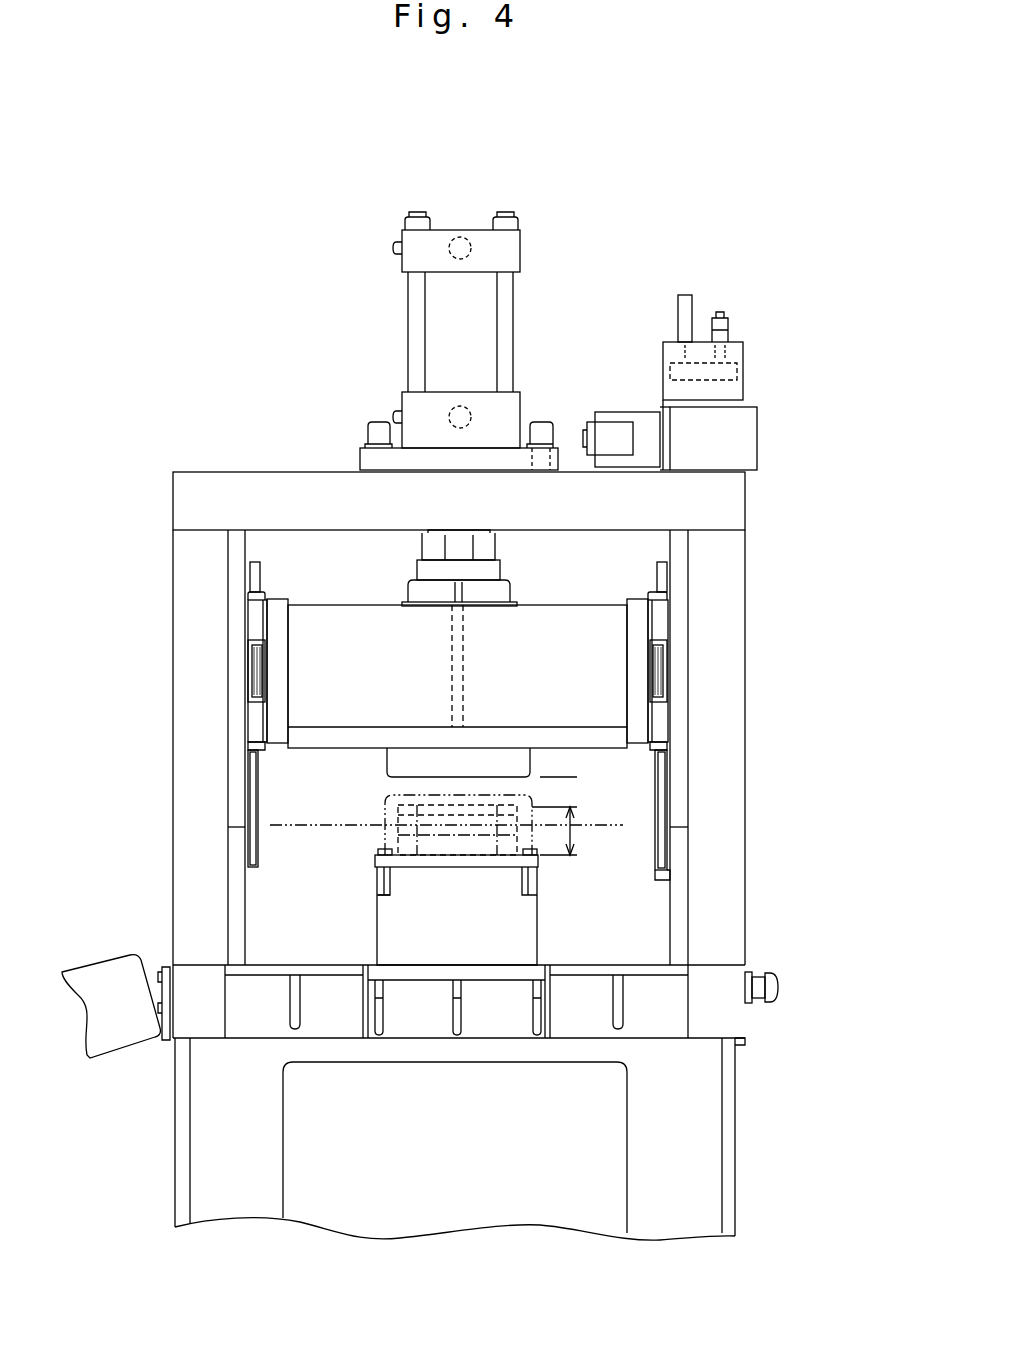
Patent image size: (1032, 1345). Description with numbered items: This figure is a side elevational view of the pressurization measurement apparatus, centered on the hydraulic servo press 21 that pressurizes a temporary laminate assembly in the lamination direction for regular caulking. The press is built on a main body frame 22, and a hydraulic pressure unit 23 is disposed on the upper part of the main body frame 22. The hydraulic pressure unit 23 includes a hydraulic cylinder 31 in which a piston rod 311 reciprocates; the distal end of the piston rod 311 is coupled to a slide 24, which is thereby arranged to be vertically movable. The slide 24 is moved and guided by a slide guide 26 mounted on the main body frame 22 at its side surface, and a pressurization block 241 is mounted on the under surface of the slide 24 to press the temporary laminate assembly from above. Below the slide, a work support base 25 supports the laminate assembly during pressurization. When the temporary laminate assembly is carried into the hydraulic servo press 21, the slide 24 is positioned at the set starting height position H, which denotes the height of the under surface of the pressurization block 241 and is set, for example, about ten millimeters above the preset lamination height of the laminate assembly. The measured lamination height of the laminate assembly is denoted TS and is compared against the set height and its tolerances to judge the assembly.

The hydraulic servo press 21 is at (250, 398).
The main body frame 22 is at (720, 600).
The hydraulic pressure unit 23 is at (475, 325).
The slide 24 is at (325, 670).
The work support base 25 is at (398, 932).
The slide guide 26 is at (264, 833).
The hydraulic cylinder 31 is at (482, 407).
The pressurization block 241 is at (388, 760).
The piston rod 311 is at (462, 578).
The starting height position H is at (567, 791).
The measurement lamination height TS is at (573, 832).